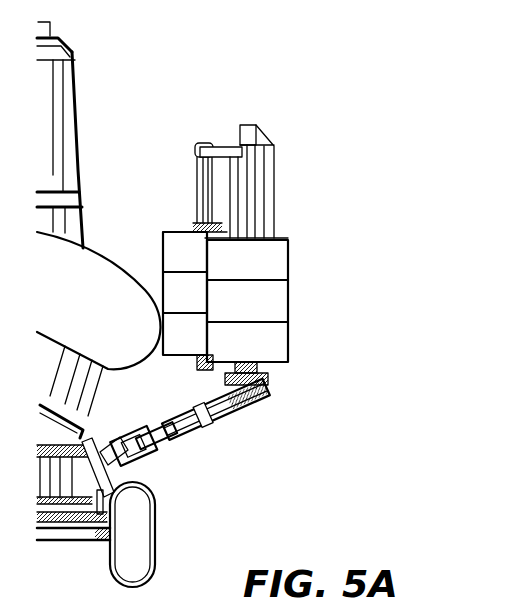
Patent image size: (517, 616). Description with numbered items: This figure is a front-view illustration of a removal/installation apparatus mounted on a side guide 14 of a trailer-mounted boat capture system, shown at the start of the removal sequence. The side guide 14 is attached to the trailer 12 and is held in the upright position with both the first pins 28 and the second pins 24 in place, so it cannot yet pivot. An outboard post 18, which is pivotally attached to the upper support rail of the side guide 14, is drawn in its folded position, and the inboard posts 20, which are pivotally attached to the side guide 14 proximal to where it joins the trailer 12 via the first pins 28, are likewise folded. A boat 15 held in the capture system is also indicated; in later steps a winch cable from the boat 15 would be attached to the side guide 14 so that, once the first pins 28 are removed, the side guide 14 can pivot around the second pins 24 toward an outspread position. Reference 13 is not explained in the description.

The trailer 12 is at (108, 575).
The frame member 13 is at (78, 108).
The side guide 14 is at (290, 291).
The boat 15 is at (59, 34).
The outboard post 18 is at (268, 183).
The inboard post 20 is at (147, 488).
The second pins 24 is at (162, 446).
The first pins 28 is at (133, 446).